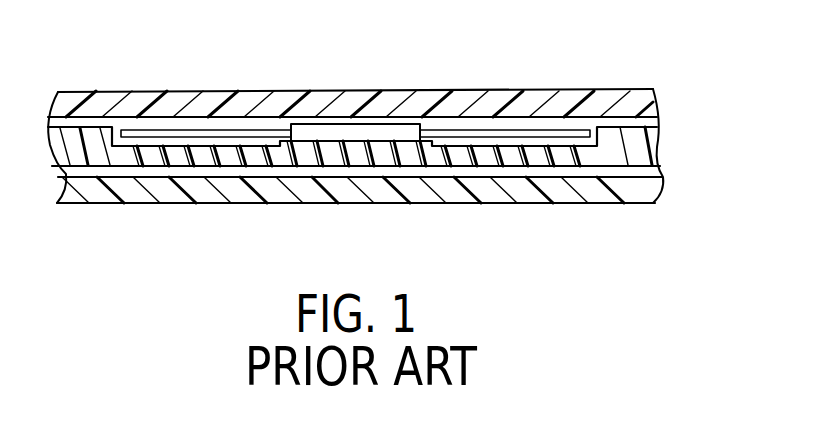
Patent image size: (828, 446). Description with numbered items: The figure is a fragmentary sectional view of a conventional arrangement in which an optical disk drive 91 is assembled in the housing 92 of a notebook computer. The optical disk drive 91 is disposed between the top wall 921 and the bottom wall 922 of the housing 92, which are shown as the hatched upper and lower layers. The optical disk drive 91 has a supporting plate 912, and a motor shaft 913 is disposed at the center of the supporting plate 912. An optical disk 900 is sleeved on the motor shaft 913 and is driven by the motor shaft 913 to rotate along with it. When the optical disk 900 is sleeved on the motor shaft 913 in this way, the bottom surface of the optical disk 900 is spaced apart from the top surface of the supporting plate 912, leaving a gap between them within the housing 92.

The housing 92 is at (358, 64).
The top wall 921 is at (458, 103).
The bottom wall 922 is at (587, 190).
The optical disk drive 91 is at (391, 146).
The supporting plate 912 is at (485, 156).
The motor shaft 913 is at (322, 132).
The optical disk 900 is at (198, 133).